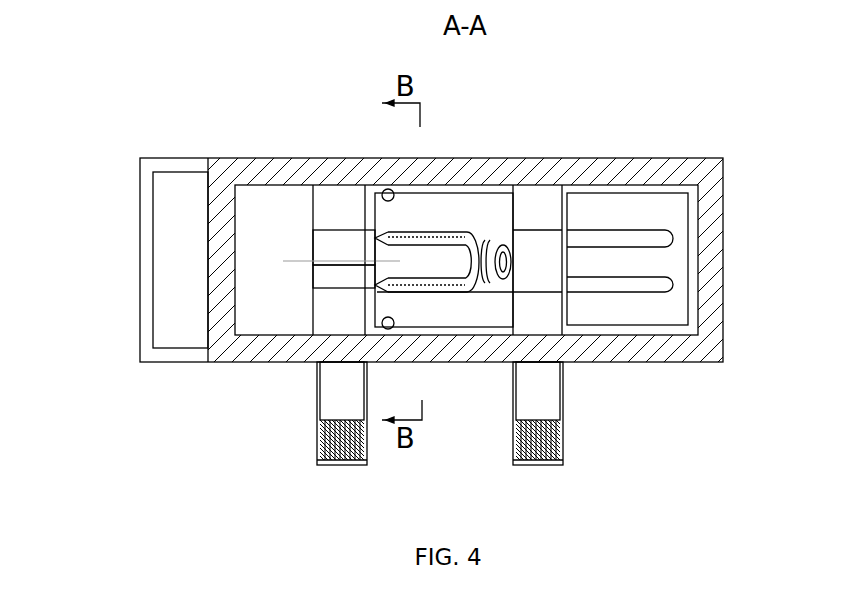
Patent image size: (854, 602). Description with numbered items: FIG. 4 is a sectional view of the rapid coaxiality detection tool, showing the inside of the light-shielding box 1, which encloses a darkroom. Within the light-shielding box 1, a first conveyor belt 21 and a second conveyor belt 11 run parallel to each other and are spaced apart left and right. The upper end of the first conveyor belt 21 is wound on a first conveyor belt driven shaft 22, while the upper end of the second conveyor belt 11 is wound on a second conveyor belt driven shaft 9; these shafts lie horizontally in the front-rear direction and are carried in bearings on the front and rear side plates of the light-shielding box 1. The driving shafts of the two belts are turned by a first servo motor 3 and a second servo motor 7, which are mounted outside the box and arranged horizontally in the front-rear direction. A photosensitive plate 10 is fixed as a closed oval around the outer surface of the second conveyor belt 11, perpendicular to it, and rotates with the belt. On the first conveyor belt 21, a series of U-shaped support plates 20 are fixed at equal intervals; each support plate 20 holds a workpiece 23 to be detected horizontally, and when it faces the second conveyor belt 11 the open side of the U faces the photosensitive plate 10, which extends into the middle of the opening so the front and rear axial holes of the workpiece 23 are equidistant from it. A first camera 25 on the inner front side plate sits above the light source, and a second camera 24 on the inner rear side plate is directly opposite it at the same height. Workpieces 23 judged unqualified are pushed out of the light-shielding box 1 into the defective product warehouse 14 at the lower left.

The light-shielding box 1 is at (223, 202).
The first servo motor 3 is at (537, 397).
The second servo motor 7 is at (335, 390).
The second conveyor belt driven shaft 9 is at (335, 203).
The photosensitive plate 10 is at (293, 263).
The second conveyor belt 11 is at (315, 245).
The defective product warehouse 14 is at (140, 327).
The support plate 20 is at (597, 283).
The first conveyor belt 21 is at (533, 257).
The first conveyor belt driven shaft 22 is at (545, 217).
The workpiece to be detected 23 is at (497, 247).
The second camera 24 is at (388, 195).
The first camera 25 is at (393, 332).